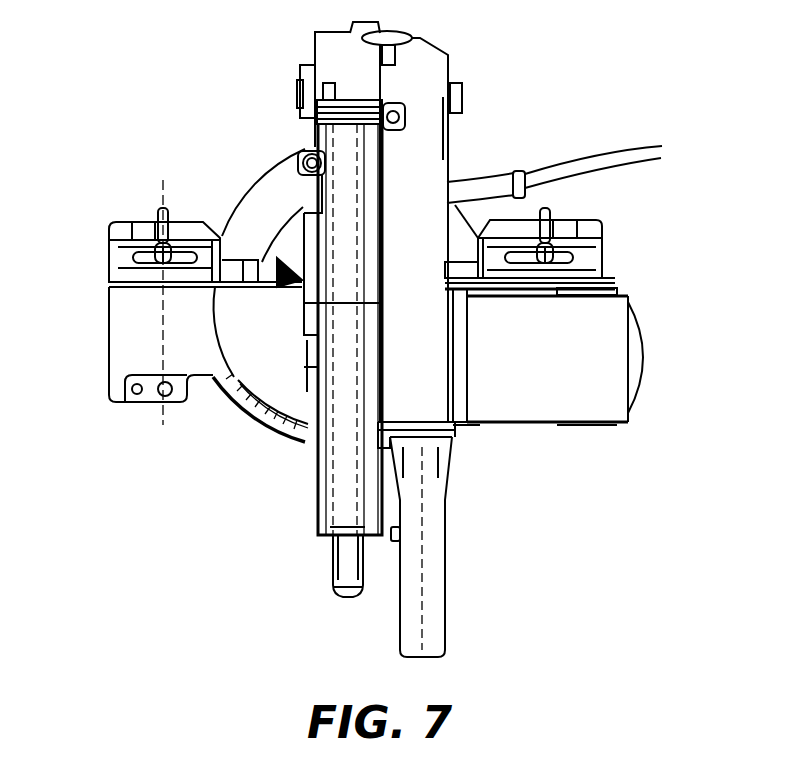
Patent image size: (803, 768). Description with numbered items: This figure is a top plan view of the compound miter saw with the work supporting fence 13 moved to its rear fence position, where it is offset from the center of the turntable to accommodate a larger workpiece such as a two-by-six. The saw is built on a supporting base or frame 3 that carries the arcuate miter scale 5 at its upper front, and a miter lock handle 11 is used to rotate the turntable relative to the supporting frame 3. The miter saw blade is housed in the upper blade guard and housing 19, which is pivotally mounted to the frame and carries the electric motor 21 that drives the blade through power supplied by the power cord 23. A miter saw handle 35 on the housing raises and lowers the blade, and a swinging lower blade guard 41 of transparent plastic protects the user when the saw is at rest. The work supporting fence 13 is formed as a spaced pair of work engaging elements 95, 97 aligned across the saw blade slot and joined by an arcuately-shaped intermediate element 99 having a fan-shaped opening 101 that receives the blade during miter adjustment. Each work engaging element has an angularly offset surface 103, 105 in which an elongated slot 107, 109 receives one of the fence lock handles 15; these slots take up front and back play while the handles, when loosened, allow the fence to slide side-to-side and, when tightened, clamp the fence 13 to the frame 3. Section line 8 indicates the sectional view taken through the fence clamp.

The supporting base or frame 3 is at (124, 339).
The arcuate miter scale 5 is at (255, 416).
The section line 8- 8 is at (163, 180).
The miter lock handle 11 is at (327, 563).
The work supporting fence 13 is at (586, 259).
The fence lock handles 15 is at (556, 213).
The upper blade guard and housing 19 is at (413, 188).
The electric motor 21 is at (570, 388).
The power cord 23 is at (613, 150).
The miter saw handle 35 is at (432, 596).
The swinging lower blade guard 41 is at (314, 503).
The work engaging element 95 is at (143, 287).
The work engaging element 97 is at (602, 300).
The arcuately-shaped intermediate element 99 is at (307, 235).
The fan-shaped opening 101 is at (280, 256).
The angularly offset surface 103 is at (125, 262).
The angularly offset surface 105 is at (598, 230).
The elongated slot 107 is at (143, 256).
The elongated slot 109 is at (513, 257).